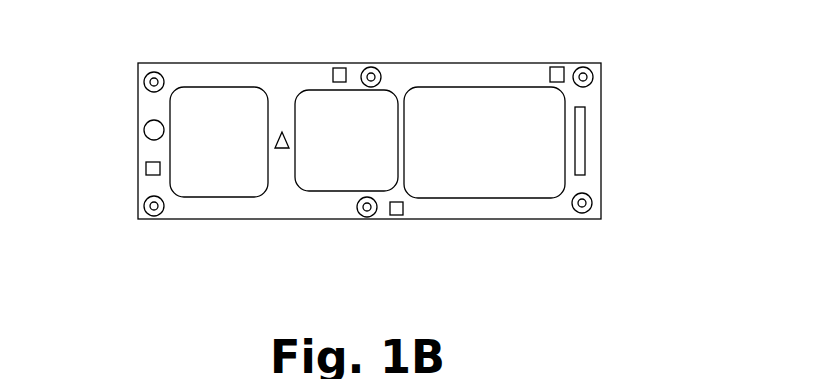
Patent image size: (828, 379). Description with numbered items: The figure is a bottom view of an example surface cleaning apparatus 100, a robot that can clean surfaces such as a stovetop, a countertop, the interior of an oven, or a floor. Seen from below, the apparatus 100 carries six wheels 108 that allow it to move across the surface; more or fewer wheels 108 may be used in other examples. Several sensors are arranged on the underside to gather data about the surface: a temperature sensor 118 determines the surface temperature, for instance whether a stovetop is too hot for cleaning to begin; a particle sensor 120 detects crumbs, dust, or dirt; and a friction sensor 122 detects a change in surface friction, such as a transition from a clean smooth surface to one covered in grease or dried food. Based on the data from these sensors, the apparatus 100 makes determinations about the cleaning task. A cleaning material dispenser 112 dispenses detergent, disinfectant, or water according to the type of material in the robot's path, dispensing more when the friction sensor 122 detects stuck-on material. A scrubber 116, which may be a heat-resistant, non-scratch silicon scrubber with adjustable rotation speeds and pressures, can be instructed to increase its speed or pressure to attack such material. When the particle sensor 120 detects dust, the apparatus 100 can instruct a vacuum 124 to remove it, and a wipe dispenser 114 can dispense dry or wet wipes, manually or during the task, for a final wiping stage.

The surface cleaning apparatus 100 is at (138, 110).
The wheels 108 is at (157, 71).
The cleaning material dispenser 112 is at (586, 137).
The wipe dispenser 114 is at (477, 180).
The scrubber 116 is at (332, 182).
The temperature sensor 118 is at (557, 63).
The particle sensor 120 is at (147, 138).
The friction sensor 122 is at (282, 148).
The vacuum 124 is at (221, 180).